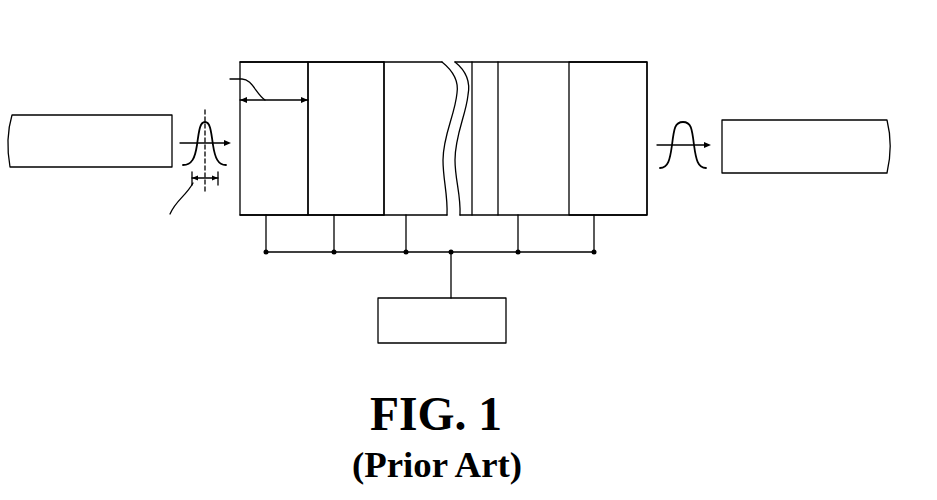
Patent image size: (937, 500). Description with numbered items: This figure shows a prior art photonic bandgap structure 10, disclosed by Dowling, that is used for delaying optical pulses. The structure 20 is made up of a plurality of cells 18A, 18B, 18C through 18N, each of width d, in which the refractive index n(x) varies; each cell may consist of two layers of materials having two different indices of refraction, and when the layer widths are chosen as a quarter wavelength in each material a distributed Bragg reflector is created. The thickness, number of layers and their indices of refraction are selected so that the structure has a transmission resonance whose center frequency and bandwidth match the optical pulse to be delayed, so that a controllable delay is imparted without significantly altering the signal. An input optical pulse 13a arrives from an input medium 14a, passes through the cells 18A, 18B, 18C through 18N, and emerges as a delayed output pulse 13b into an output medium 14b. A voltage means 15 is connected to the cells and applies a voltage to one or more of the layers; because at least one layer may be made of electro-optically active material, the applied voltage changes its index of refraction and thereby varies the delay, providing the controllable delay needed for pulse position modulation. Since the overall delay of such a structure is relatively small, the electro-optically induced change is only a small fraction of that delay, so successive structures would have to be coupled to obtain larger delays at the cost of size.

The prior art optical pulse shaping system 10 is at (147, 34).
The input medium 14a is at (82, 115).
The input optical pulse 13a is at (200, 122).
The segmented refractive index structure 20 is at (252, 62).
The cell 18A is at (272, 62).
The cell 18B is at (330, 62).
The cell 18C is at (412, 62).
The cell 18N is at (588, 62).
The voltage means 15 is at (506, 311).
The output optical pulse 13b is at (690, 123).
The output medium 14b is at (807, 120).